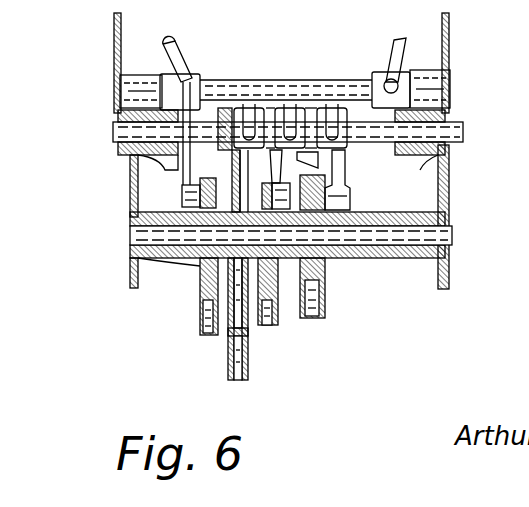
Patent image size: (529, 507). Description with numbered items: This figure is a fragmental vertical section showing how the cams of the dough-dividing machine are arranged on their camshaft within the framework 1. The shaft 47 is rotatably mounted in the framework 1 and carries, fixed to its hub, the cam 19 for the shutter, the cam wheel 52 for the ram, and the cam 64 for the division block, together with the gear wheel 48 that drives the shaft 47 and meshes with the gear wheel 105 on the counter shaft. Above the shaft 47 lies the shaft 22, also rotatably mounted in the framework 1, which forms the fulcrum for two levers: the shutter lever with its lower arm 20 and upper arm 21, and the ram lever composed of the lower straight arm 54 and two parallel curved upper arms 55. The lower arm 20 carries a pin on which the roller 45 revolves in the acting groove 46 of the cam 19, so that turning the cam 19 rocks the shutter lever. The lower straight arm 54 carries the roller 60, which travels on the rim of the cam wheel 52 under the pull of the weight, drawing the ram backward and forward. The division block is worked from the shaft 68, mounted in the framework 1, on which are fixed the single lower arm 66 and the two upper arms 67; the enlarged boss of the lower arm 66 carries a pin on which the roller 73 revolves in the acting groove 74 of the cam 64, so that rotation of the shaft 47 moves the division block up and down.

The framework 1 is at (113, 34).
The upper arm 67 is at (178, 62).
The shaft 68 is at (113, 95).
The shaft 22 is at (112, 133).
The lower arm 66 is at (183, 163).
The roller 73 is at (181, 196).
The upper arm 55 is at (249, 108).
The roller 45 is at (284, 126).
The lower arm 20 is at (290, 106).
The upper arm 21 is at (316, 152).
The roller 60 is at (318, 196).
The lower straight arm 54 is at (346, 166).
The shaft 47 is at (136, 236).
The cam 64 is at (212, 336).
The acting groove 74 is at (203, 322).
The gear wheel 48 is at (230, 348).
The gear wheel 105 is at (242, 362).
The acting groove 46 is at (278, 312).
The cam wheel 52 is at (326, 316).
The cam 19 is at (270, 330).